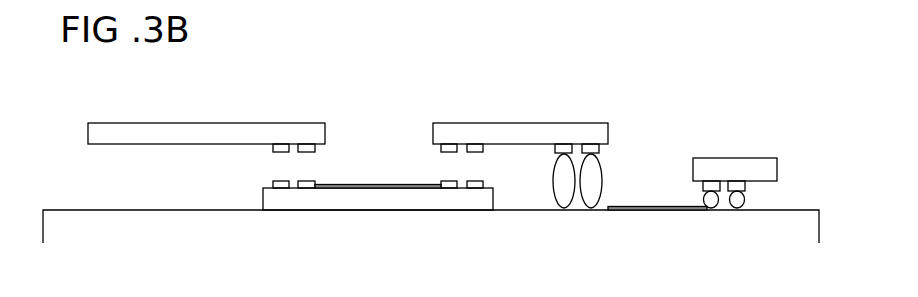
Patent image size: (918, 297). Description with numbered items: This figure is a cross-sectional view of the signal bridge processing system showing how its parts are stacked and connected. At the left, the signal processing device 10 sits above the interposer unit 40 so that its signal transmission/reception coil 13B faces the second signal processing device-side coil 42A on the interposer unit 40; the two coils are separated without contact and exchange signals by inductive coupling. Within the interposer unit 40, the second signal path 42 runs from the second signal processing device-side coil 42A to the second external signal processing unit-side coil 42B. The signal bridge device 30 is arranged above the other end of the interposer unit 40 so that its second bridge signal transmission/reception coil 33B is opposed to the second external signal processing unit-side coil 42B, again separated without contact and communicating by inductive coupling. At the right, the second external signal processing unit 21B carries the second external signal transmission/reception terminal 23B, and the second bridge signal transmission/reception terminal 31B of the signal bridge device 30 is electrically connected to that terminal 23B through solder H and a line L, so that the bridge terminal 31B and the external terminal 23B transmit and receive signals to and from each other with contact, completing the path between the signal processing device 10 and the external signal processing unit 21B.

The signal processing device 10 is at (131, 123).
The second signal transmission/reception coil 13B is at (273, 149).
The signal bridge device 30 is at (580, 123).
The second bridge signal transmission/reception coil 33B is at (484, 149).
The second bridge signal transmission/reception terminal 31B is at (603, 148).
The interposer unit 40 is at (388, 205).
The second signal path 42 is at (366, 185).
The second signal processing device-side coil 42A is at (273, 182).
The second external signal processing unit-side coil 42B is at (485, 182).
The second external signal processing unit 21B is at (757, 158).
The second external signal transmission/reception terminal 23B is at (700, 187).
The solder H is at (593, 180).
The line L is at (648, 211).